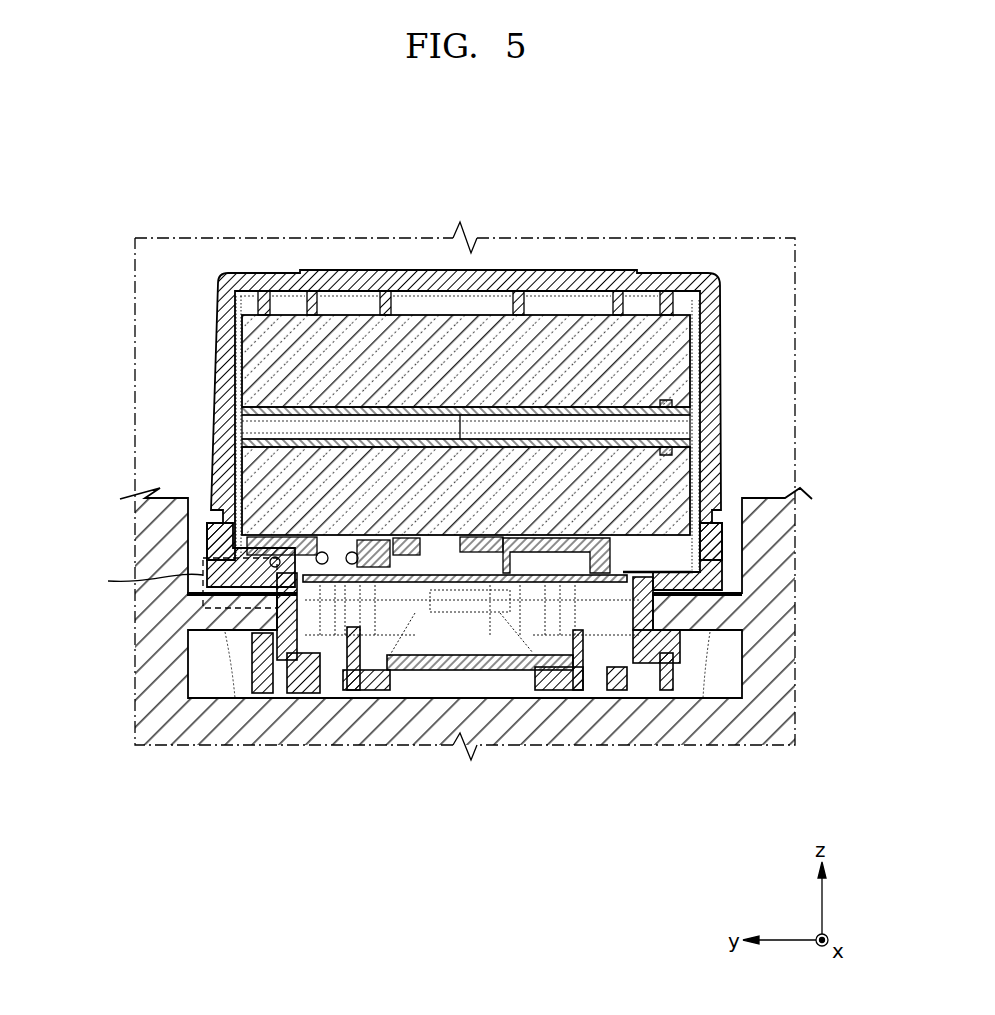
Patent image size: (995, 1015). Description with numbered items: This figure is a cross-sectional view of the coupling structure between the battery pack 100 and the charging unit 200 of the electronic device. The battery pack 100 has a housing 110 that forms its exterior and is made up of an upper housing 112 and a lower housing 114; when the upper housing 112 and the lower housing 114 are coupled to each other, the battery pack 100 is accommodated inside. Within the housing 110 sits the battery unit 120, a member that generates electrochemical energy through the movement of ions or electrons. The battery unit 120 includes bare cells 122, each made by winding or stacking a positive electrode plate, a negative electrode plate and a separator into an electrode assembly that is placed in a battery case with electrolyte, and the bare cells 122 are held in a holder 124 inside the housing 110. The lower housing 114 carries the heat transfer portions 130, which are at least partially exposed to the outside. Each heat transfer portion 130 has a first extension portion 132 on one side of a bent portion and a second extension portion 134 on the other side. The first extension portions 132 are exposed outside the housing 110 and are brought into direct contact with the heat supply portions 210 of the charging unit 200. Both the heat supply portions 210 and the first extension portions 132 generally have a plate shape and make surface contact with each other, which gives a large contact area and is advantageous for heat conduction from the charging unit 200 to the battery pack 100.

The battery pack 100 is at (461, 428).
The housing 110 is at (375, 430).
The upper housing 112 is at (220, 413).
The lower housing 114 is at (215, 545).
The battery unit 120 is at (567, 425).
The bare cell 122 is at (662, 360).
The holder 124 is at (662, 408).
The heat transfer portion 130 is at (541, 623).
The first extension portion 132 is at (670, 592).
The second extension portion 134 is at (660, 578).
The charging unit 200 is at (506, 648).
The heat supply portion 210 is at (219, 600).